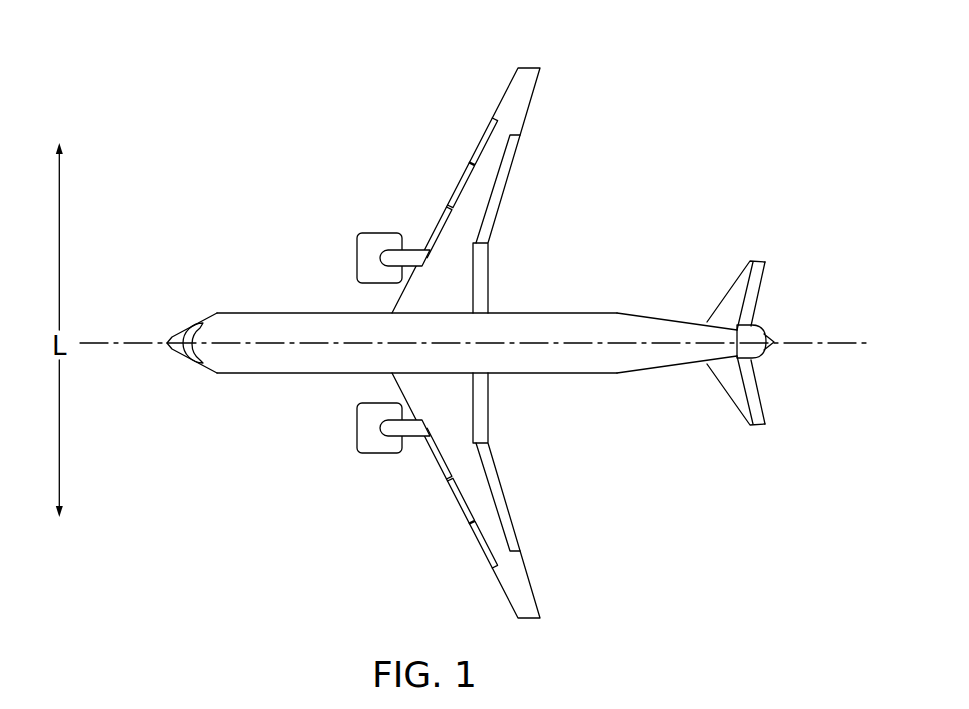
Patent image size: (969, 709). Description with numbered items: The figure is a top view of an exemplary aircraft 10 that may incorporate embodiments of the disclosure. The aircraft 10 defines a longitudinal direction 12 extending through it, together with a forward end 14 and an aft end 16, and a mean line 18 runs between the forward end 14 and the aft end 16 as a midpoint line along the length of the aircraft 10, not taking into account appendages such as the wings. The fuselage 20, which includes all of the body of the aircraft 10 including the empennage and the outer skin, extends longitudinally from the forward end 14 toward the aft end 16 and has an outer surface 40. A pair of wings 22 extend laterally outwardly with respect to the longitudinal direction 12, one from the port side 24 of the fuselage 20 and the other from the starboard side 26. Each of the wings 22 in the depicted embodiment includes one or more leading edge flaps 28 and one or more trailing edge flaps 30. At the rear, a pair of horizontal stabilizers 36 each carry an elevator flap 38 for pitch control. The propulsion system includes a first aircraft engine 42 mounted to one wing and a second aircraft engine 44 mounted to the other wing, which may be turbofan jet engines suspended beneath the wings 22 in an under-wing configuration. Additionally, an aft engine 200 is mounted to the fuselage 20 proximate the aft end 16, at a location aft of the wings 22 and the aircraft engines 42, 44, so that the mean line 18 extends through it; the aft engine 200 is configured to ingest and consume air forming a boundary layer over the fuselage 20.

The aircraft 10 is at (645, 157).
The longitudinal direction 12 is at (95, 341).
The forward end 14 is at (167, 361).
The aft end 16 is at (793, 378).
The mean line 18 is at (228, 341).
The fuselage 20 is at (217, 357).
The wings 22 is at (523, 87).
The port side 24 is at (287, 382).
The starboard side 26 is at (286, 311).
The leading edge flaps 28 is at (458, 503).
The trailing edge flaps 30 is at (512, 503).
The horizontal stabilizers 36 is at (737, 277).
The elevator flap 38 is at (767, 272).
The outer surface 40 is at (588, 353).
The first aircraft engine 42 is at (373, 461).
The second aircraft engine 44 is at (370, 229).
The aft engine 200 is at (765, 323).